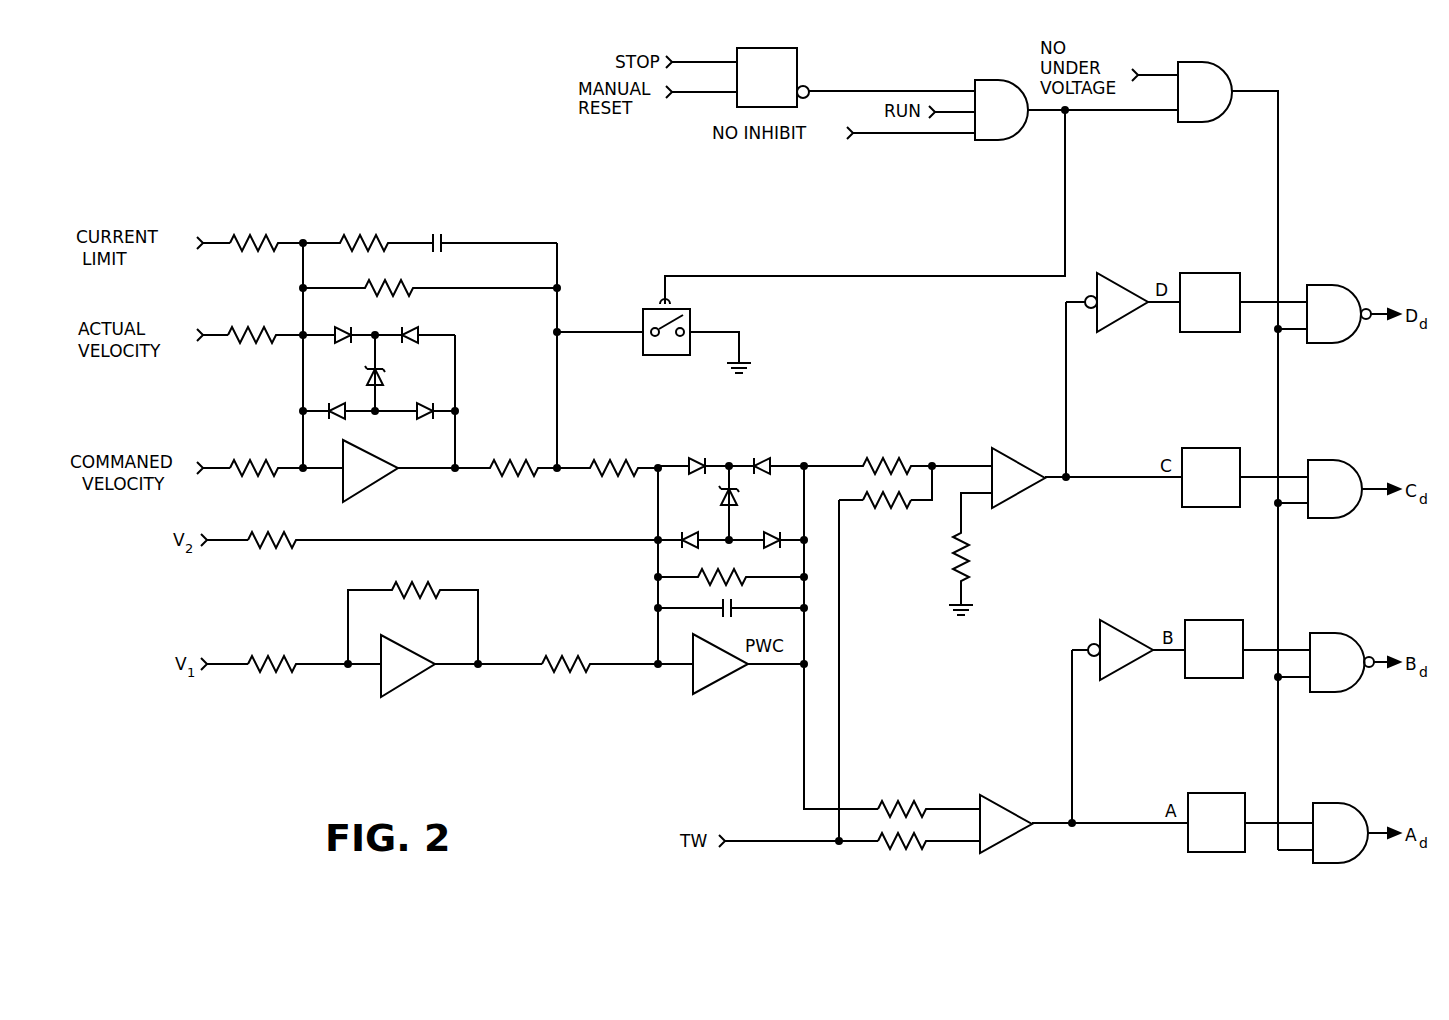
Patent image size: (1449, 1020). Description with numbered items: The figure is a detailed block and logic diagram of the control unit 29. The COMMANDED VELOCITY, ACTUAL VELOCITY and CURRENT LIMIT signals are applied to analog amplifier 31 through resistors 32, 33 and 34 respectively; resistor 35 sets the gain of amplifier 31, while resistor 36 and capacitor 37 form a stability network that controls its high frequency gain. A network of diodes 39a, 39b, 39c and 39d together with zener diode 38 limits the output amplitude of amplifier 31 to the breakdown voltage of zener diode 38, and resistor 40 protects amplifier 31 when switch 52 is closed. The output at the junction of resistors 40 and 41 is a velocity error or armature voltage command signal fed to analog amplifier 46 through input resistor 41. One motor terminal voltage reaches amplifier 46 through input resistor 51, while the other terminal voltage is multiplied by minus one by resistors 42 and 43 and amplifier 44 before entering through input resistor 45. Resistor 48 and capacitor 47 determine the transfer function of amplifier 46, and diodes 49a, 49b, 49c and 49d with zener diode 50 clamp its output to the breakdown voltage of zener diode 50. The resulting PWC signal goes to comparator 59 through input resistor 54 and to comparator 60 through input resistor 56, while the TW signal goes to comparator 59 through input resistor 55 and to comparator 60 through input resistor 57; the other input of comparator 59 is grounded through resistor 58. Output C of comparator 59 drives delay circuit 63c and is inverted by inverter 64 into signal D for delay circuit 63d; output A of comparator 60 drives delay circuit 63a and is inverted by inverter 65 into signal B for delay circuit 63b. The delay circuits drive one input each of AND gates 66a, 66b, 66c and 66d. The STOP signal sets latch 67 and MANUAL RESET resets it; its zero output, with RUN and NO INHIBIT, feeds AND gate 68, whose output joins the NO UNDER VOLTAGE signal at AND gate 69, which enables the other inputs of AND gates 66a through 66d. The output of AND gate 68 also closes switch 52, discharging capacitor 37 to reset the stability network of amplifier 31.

The control unit 29 is at (520, 189).
The analog amplifier 31 is at (363, 492).
The resistor 32 is at (256, 458).
The resistor 33 is at (270, 316).
The resistor 34 is at (258, 234).
The resistor 35 is at (390, 276).
The resistor 36 is at (372, 234).
The capacitor 37 is at (444, 230).
The zener diode 38 is at (385, 374).
The diode 39a is at (341, 324).
The diode 39b is at (414, 324).
The diode 39c is at (333, 400).
The diode 39d is at (425, 420).
The resistor 40 is at (514, 456).
The input resistor 41 is at (622, 450).
The resistor 42 is at (282, 656).
The resistor 43 is at (430, 574).
The amplifier 44 is at (412, 658).
The input resistor 45 is at (568, 654).
The analog amplifier 46 is at (718, 682).
The capacitor 47 is at (740, 604).
The resistor 48 is at (732, 568).
The diode 49a is at (690, 456).
The diode 49b is at (763, 450).
The diode 49c is at (697, 520).
The diode 49d is at (782, 526).
The zener diode 50 is at (742, 496).
The input resistor 51 is at (294, 530).
The switch 52 is at (698, 314).
The input resistor 54 is at (898, 448).
The input resistor 55 is at (886, 514).
The input resistor 56 is at (910, 796).
The input resistor 57 is at (896, 852).
The resistor 58 is at (946, 562).
The comparator 59 is at (1022, 450).
The comparator 60 is at (1014, 798).
The delay circuit 63a is at (1220, 788).
The delay circuit 63b is at (1220, 616).
The delay circuit 63c is at (1220, 448).
The delay circuit 63d is at (1217, 268).
The inverter 64 is at (1132, 284).
The inverter 65 is at (1127, 620).
The AND gate 66a is at (1339, 800).
The AND gate 66b is at (1339, 630).
The AND gate 66c is at (1332, 458).
The AND gate 66d is at (1332, 282).
The latch 67 is at (798, 52).
The AND gate 68 is at (976, 80).
The AND gate 69 is at (1240, 68).